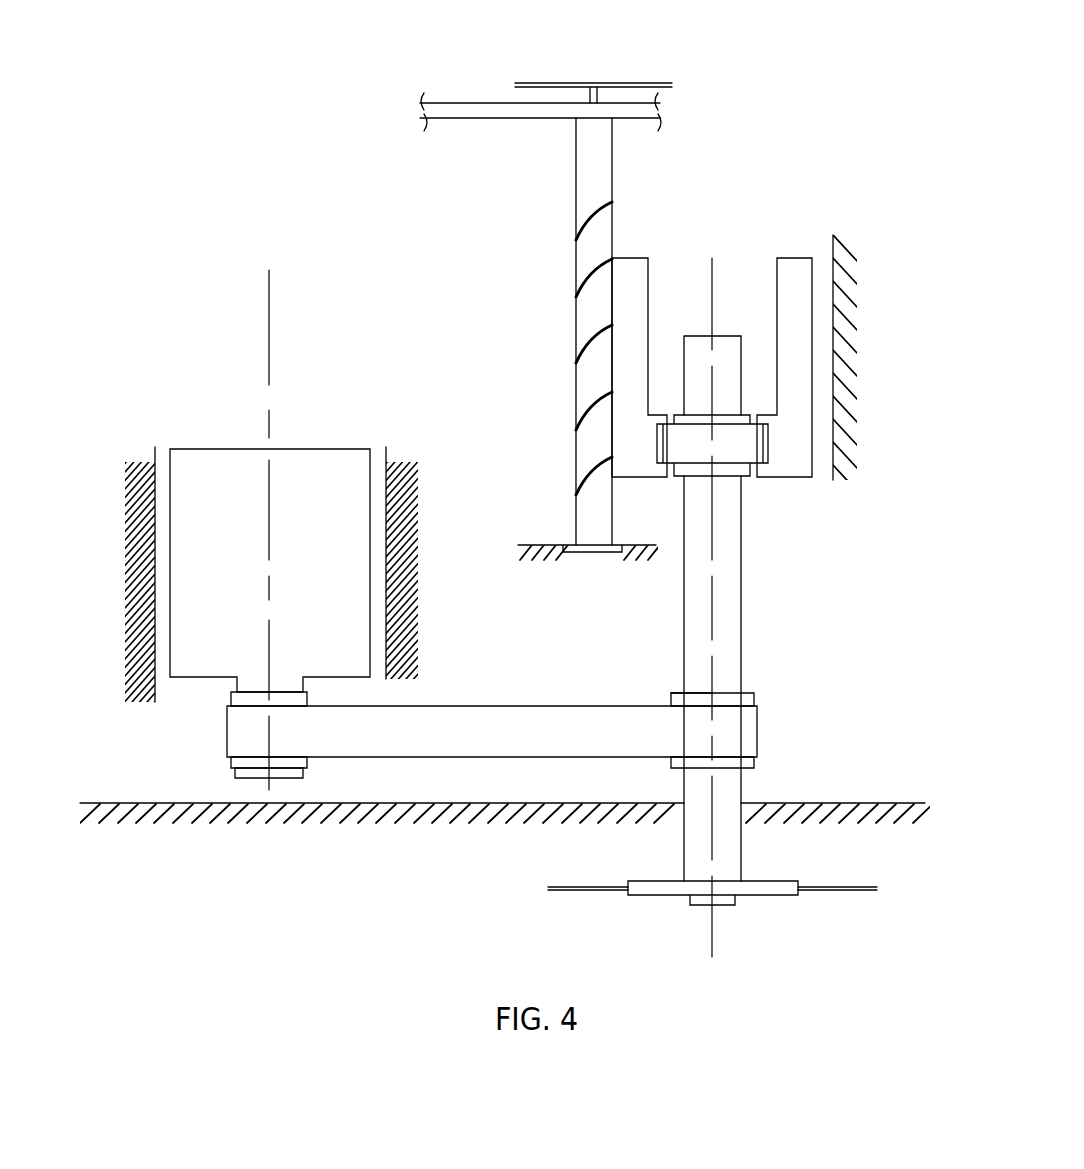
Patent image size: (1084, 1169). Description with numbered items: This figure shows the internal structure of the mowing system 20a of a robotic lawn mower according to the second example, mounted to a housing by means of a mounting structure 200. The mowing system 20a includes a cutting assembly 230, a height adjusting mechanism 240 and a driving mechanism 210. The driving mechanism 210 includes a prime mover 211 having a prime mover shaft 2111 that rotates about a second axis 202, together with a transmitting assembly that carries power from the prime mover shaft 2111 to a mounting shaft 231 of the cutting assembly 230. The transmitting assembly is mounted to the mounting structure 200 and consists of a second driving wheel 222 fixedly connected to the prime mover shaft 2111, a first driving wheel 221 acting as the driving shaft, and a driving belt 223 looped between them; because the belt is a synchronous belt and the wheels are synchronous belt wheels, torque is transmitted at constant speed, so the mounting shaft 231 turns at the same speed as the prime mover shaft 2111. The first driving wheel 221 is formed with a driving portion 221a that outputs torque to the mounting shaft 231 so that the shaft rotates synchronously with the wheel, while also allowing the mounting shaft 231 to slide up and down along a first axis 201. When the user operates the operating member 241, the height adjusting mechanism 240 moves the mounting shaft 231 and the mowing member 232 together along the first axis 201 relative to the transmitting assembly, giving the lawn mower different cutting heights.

The mounting structure 200 is at (483, 103).
The operating member 241 is at (595, 83).
The height adjusting mechanism 240 is at (815, 132).
The mowing system 20a is at (575, 297).
The first axis 201 is at (714, 258).
The second axis 202 is at (268, 285).
The driving mechanism 210 is at (172, 393).
The prime mover 211 is at (207, 488).
The second driving wheel 222 is at (235, 695).
The prime mover shaft 2111 is at (243, 773).
The driving belt 223 is at (745, 750).
The first driving wheel 221 is at (745, 702).
The driving portion 221a is at (681, 692).
The mounting shaft 231 is at (735, 547).
The cutting assembly 230 is at (653, 893).
The mowing member 232 is at (812, 890).